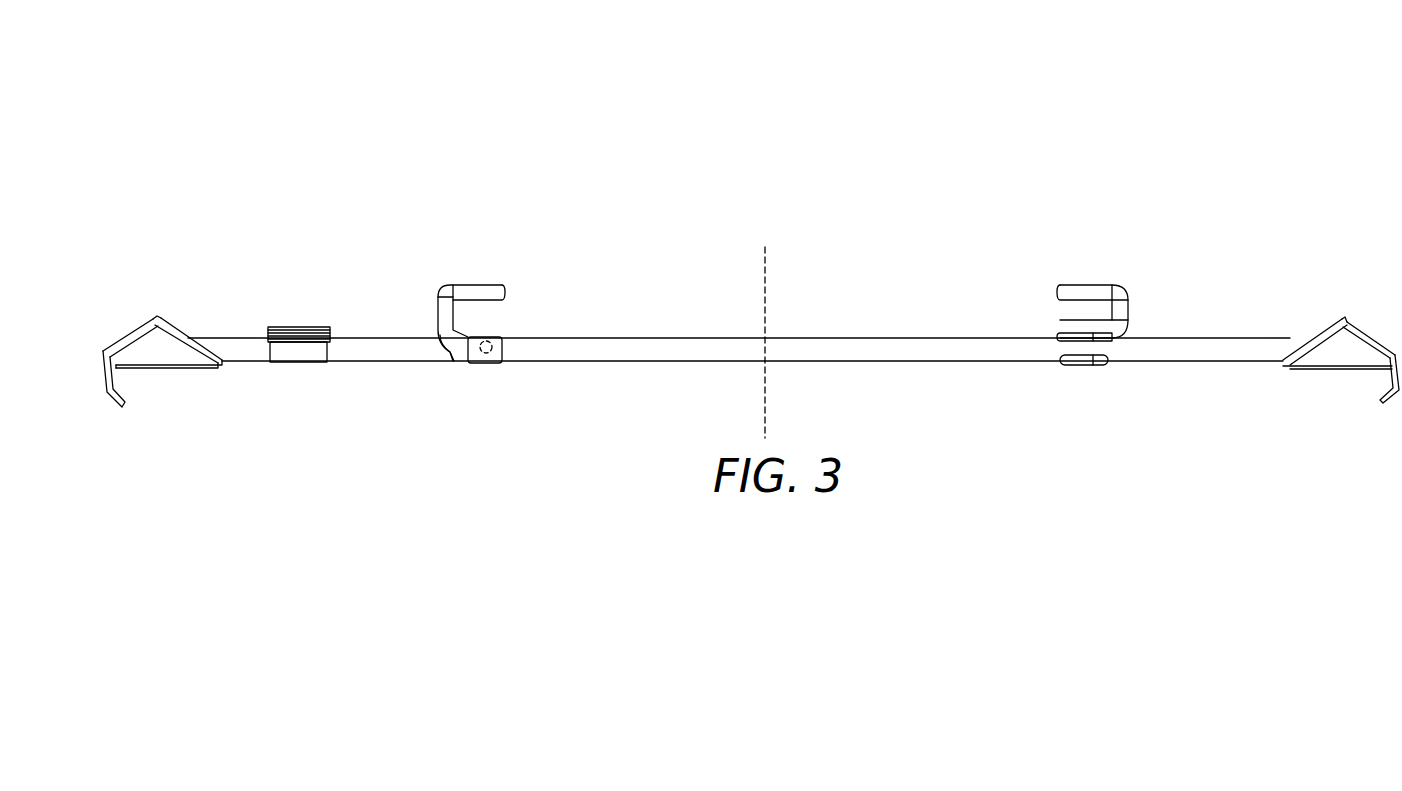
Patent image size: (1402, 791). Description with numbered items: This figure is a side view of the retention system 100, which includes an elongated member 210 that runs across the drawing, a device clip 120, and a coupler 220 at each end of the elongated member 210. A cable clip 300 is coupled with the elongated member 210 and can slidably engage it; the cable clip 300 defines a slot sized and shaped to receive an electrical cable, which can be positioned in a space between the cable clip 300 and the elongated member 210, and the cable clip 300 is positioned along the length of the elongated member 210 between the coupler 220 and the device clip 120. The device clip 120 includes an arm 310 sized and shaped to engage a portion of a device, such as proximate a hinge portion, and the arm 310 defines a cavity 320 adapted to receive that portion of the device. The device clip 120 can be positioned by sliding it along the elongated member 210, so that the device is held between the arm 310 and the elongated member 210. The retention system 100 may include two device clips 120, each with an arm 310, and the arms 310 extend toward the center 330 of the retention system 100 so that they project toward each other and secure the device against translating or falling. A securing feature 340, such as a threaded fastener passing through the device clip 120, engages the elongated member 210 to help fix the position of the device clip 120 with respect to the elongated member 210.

The retention system 100 is at (238, 86).
The device clip 120 is at (464, 357).
The elongated member 210 is at (913, 352).
The coupler 220 is at (146, 348).
The cable clip 300 is at (298, 356).
The arm 310 is at (481, 292).
The cavity 320 is at (512, 313).
The center 330 is at (765, 293).
The securing feature 340 is at (487, 355).